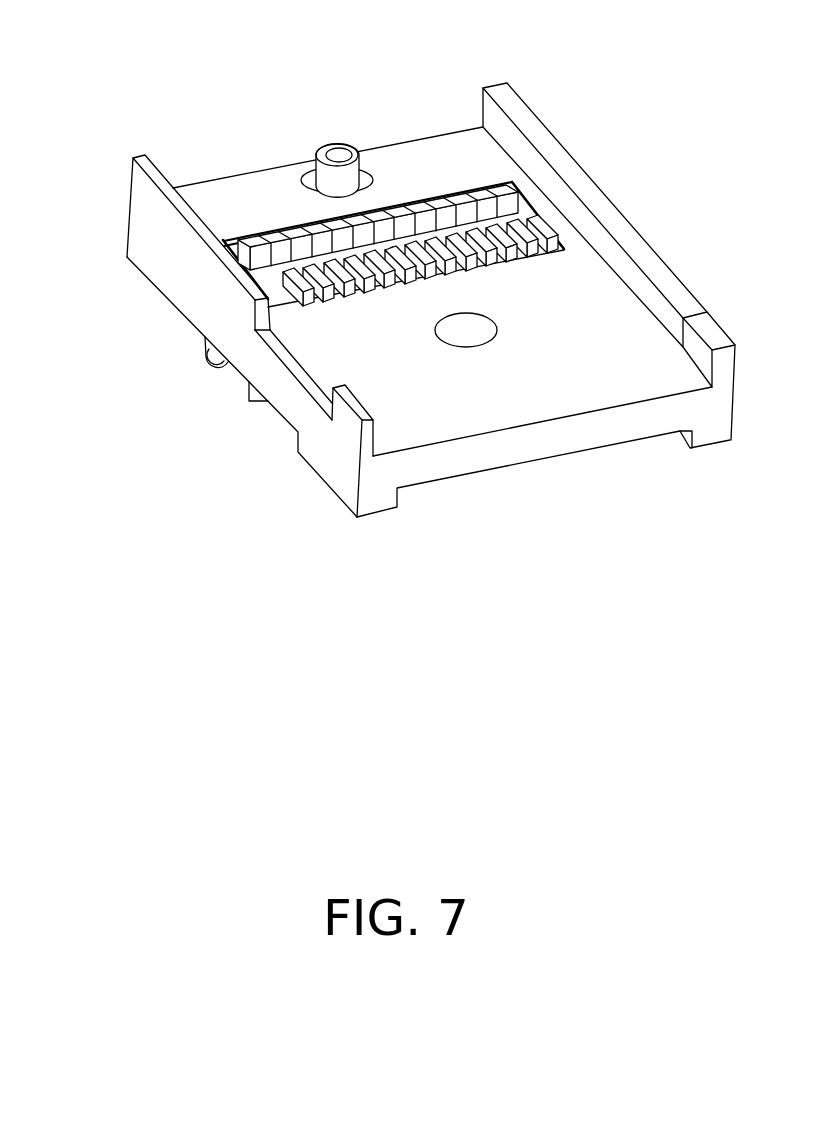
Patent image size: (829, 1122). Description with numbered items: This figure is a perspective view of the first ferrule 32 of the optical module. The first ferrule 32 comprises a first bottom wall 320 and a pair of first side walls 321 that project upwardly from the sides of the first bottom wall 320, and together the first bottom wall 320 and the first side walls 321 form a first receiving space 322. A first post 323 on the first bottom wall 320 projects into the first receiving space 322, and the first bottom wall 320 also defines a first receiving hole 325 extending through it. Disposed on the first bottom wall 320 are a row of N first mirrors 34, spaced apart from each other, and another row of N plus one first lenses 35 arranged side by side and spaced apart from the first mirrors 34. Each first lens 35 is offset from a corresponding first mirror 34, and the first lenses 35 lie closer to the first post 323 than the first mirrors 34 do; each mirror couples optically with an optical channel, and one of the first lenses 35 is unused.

The first ferrule 32 is at (372, 72).
The first bottom wall 320 is at (452, 162).
The first side walls 321 is at (568, 172).
The first receiving space 322 is at (255, 200).
The first post 323 is at (340, 150).
The first receiving hole 325 is at (552, 233).
The first mirrors 34 is at (540, 258).
The first lenses 35 is at (510, 198).